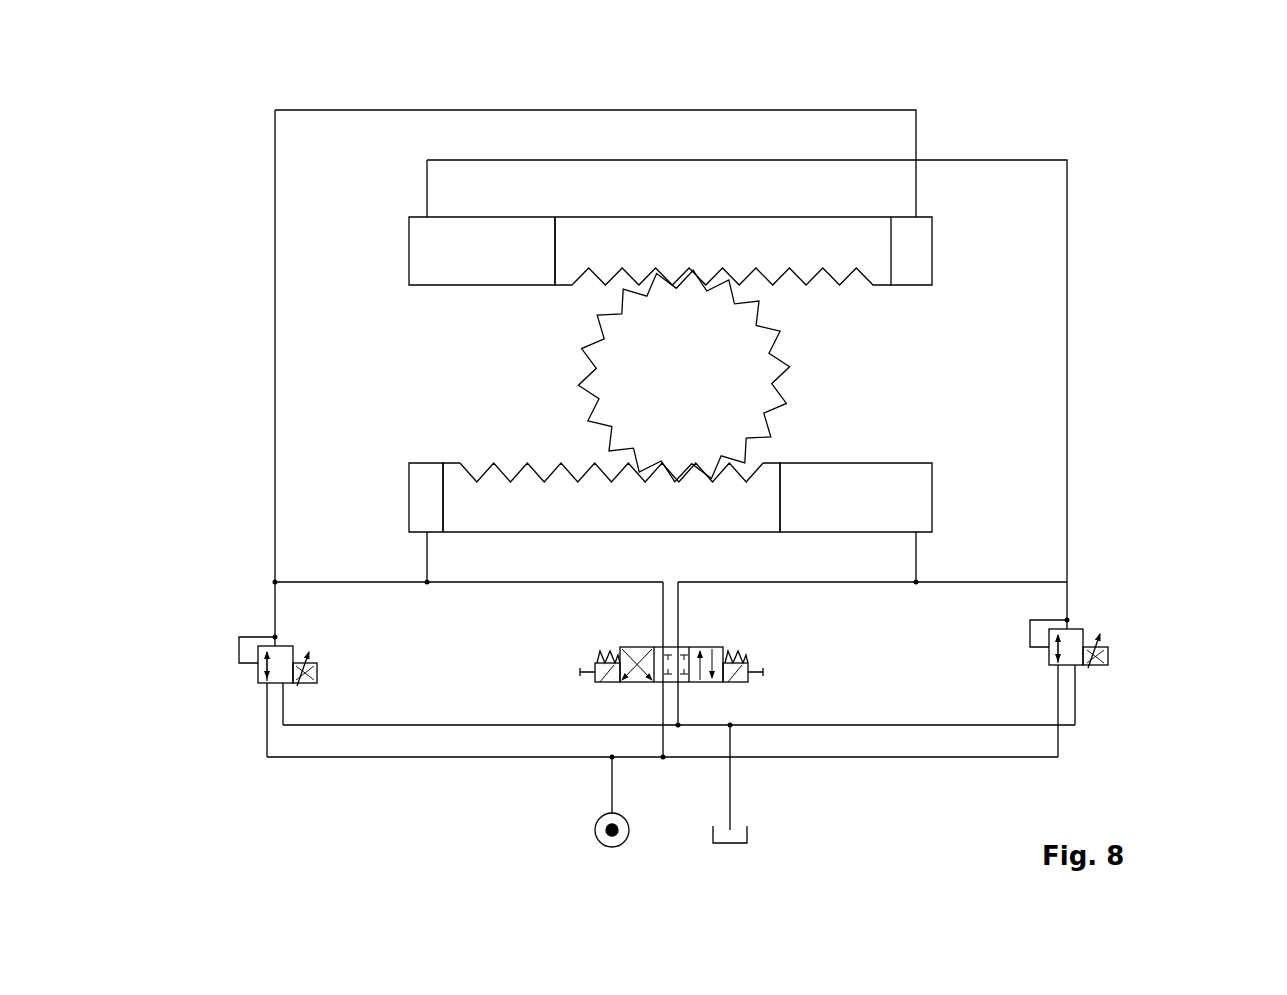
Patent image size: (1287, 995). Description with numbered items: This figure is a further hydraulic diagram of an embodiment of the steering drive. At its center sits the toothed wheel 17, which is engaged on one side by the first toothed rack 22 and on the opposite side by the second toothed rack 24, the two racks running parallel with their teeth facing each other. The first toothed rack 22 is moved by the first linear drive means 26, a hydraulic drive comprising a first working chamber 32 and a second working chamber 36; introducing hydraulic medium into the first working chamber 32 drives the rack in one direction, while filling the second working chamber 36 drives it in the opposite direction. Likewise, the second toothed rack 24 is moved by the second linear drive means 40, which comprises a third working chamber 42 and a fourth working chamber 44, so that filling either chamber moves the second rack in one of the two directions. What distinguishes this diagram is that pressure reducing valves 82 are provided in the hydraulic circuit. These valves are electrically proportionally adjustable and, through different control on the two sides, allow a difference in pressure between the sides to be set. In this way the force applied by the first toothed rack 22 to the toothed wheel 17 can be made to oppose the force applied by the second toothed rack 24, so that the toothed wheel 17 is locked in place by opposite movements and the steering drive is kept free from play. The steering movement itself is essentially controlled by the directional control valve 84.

The toothed wheel 17 is at (738, 387).
The first toothed rack 22 is at (790, 242).
The second toothed rack 24 is at (503, 518).
The first linear drive means 26 is at (685, 166).
The first working chamber 32 is at (466, 240).
The second working chamber 36 is at (911, 258).
The second linear drive means 40 is at (684, 567).
The third working chamber 42 is at (425, 508).
The fourth working chamber 44 is at (852, 490).
The pressure reducing valve 82 is at (215, 652).
The directional control valve 84 is at (612, 690).